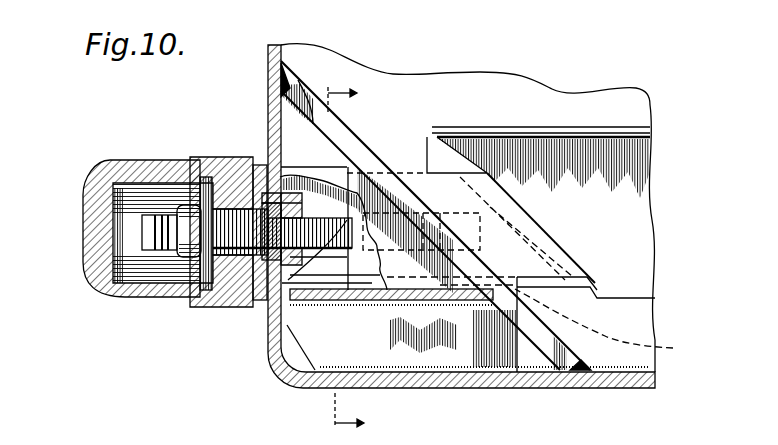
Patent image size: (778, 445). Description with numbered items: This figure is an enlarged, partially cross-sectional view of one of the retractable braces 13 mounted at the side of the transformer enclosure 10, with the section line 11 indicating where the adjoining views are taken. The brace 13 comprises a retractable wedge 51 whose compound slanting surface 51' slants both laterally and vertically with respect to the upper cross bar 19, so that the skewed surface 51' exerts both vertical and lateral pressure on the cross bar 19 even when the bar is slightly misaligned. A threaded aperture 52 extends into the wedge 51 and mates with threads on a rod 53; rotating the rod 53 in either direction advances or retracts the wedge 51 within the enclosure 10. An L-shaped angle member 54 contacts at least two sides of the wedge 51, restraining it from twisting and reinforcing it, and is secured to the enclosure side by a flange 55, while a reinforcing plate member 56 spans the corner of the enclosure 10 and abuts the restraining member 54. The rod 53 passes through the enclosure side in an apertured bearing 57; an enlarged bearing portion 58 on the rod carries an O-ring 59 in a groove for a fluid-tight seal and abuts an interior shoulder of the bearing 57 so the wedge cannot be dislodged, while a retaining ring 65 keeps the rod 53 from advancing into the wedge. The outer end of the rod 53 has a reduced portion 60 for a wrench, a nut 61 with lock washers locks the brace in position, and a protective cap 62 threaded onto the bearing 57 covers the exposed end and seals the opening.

The enclosure 10 is at (268, 60).
The section line 11 is at (361, 260).
The retractable brace 13 is at (191, 222).
The upper cross bar 19 is at (609, 231).
The retractable wedge 51 is at (538, 108).
The compound slanting surface 51' is at (549, 272).
The threaded aperture 52 is at (609, 327).
The rod 53 is at (270, 300).
The L-shaped angle member 54 is at (417, 277).
The flange 55 is at (348, 361).
The reinforcing plate member 56 is at (391, 117).
The apertured bearing 57 is at (207, 177).
The enlarged bearing portion 58 is at (226, 183).
The O-ring 59 is at (256, 167).
The reduced portion 60 is at (143, 228).
The nut 61 is at (190, 260).
The protective cap 62 is at (92, 297).
The retaining ring 65 is at (233, 295).